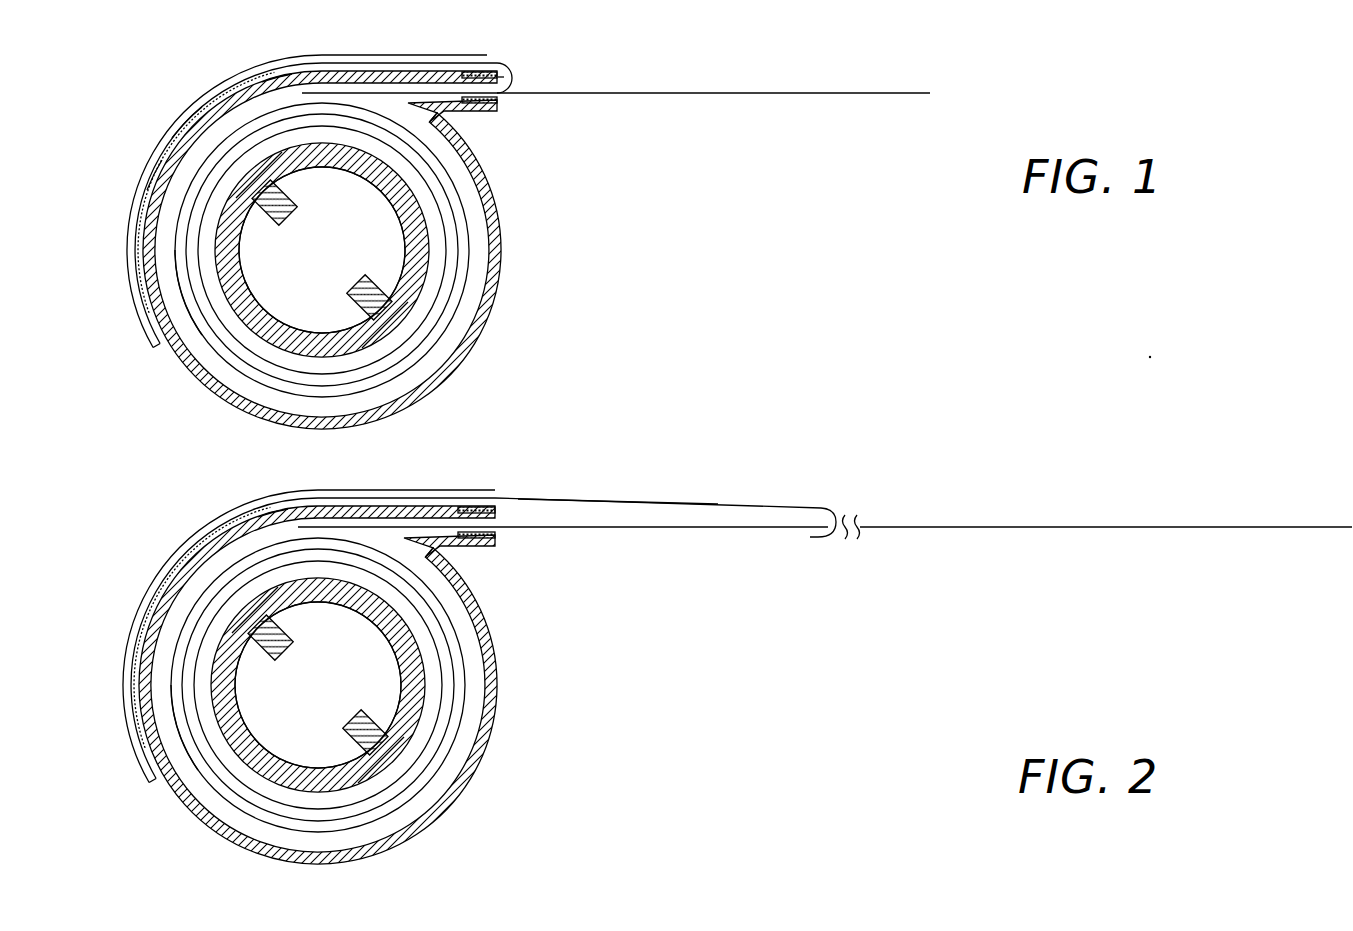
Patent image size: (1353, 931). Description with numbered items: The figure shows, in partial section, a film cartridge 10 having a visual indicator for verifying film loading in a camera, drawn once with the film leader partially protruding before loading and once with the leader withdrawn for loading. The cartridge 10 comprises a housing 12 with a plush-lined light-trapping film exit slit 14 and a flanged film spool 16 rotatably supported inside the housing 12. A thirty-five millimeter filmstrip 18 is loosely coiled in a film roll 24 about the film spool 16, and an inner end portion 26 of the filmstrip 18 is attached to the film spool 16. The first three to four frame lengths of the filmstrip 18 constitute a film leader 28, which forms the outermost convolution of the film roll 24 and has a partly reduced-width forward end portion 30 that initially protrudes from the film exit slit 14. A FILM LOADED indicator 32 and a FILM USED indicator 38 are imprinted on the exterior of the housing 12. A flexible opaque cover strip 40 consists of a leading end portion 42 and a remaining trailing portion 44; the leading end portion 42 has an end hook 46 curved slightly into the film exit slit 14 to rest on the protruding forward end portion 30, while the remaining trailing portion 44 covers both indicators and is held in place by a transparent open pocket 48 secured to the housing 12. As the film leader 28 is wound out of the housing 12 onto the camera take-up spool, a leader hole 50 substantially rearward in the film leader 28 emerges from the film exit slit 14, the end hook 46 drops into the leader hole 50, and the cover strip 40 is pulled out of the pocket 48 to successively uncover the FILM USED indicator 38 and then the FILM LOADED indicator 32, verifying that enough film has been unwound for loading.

In FIG. 1, the film cartridge 10 is at (520, 278).
In FIG. 2, the film cartridge 10 is at (505, 742).
In FIG. 1, the housing 12 is at (495, 310).
In FIG. 2, the housing 12 is at (483, 770).
In FIG. 1, the film exit slit 14 is at (498, 103).
In FIG. 2, the film exit slit 14 is at (482, 520).
In FIG. 1, the film spool 16 is at (420, 365).
In FIG. 2, the film spool 16 is at (395, 762).
In FIG. 1, the filmstrip 18 is at (358, 398).
In FIG. 2, the filmstrip 18 is at (395, 800).
In FIG. 1, the film roll 24 is at (442, 342).
In FIG. 2, the film roll 24 is at (355, 812).
In FIG. 1, the inner end portion 26 is at (400, 146).
In FIG. 2, the inner end portion 26 is at (395, 594).
In FIG. 1, the film leader 28 is at (195, 135).
In FIG. 2, the film leader 28 is at (884, 542).
In FIG. 1, the forward end portion 30 is at (858, 92).
In FIG. 2, the forward end portion 30 is at (1330, 527).
In FIG. 1, the FILM LOADED indicator 32 is at (272, 70).
In FIG. 2, the FILM LOADED indicator 32 is at (262, 507).
In FIG. 1, the FILM USED indicator 38 is at (138, 242).
In FIG. 2, the FILM USED indicator 38 is at (135, 627).
In FIG. 1, the cover strip 40 is at (355, 62).
In FIG. 2, the cover strip 40 is at (676, 500).
In FIG. 1, the leading end portion 42 is at (483, 60).
In FIG. 2, the leading end portion 42 is at (812, 505).
In FIG. 1, the remaining trailing portion 44 is at (200, 138).
In FIG. 2, the remaining trailing portion 44 is at (600, 503).
In FIG. 1, the end hook 46 is at (510, 82).
In FIG. 2, the end hook 46 is at (847, 525).
In FIG. 1, the pocket 48 is at (142, 180).
In FIG. 2, the pocket 48 is at (190, 552).
In FIG. 1, the leader hole 50 is at (190, 362).
In FIG. 2, the leader hole 50 is at (845, 537).